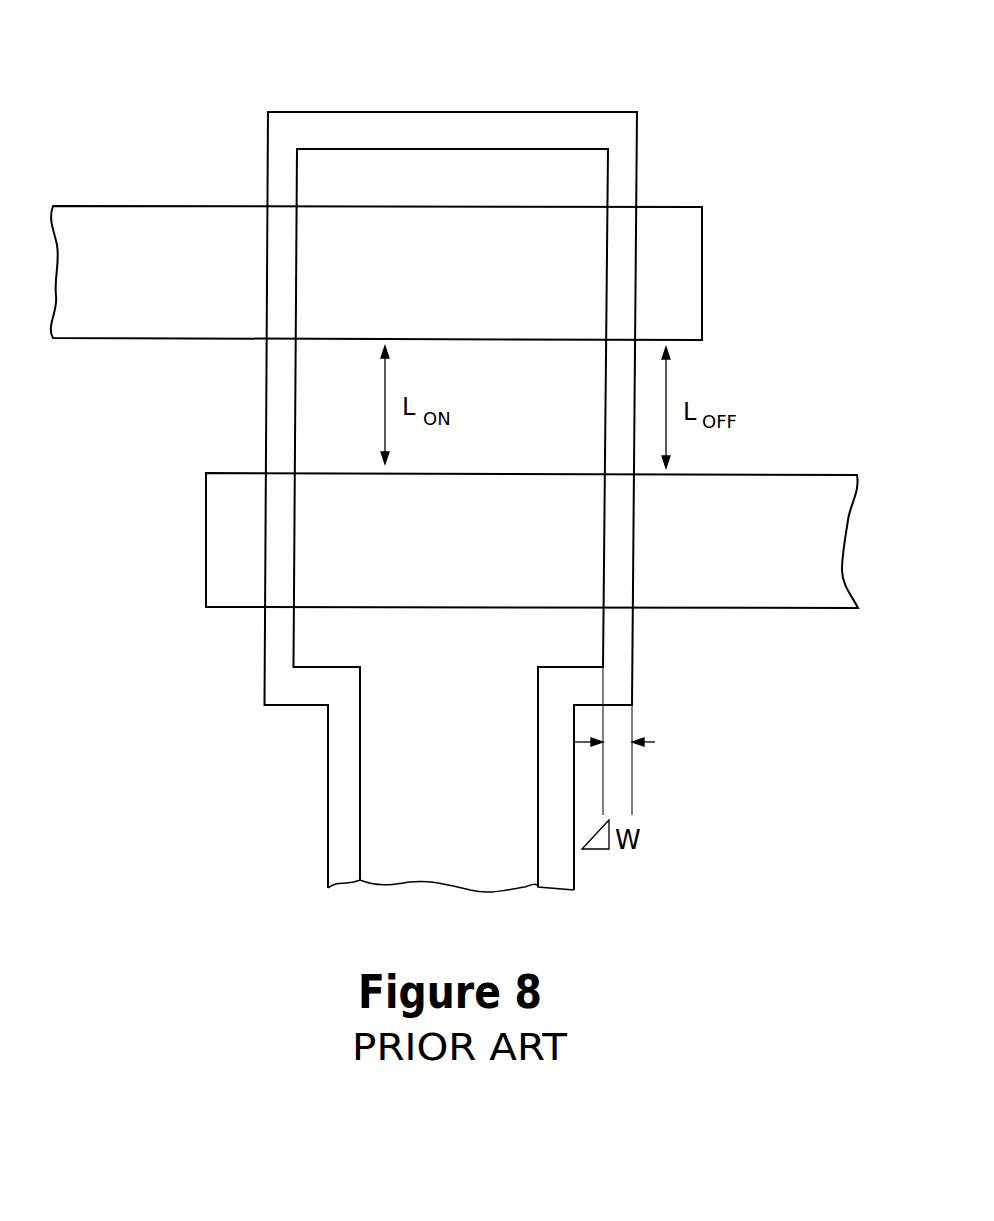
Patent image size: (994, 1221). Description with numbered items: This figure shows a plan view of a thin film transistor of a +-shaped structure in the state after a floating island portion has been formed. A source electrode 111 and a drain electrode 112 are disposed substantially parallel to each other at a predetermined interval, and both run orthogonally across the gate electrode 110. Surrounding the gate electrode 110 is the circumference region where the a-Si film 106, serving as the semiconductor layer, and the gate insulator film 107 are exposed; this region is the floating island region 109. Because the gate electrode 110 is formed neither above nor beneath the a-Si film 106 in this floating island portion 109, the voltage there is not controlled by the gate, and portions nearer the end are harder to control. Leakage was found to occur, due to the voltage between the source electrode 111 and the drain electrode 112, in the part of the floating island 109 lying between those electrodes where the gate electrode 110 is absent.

The amorphous silicon film 106 is at (275, 387).
The gate insulating film 107 is at (608, 177).
The floating island region 109 is at (382, 453).
The gate electrode 110 is at (509, 503).
The source electrode 111 is at (137, 218).
The drain electrode 112 is at (727, 596).